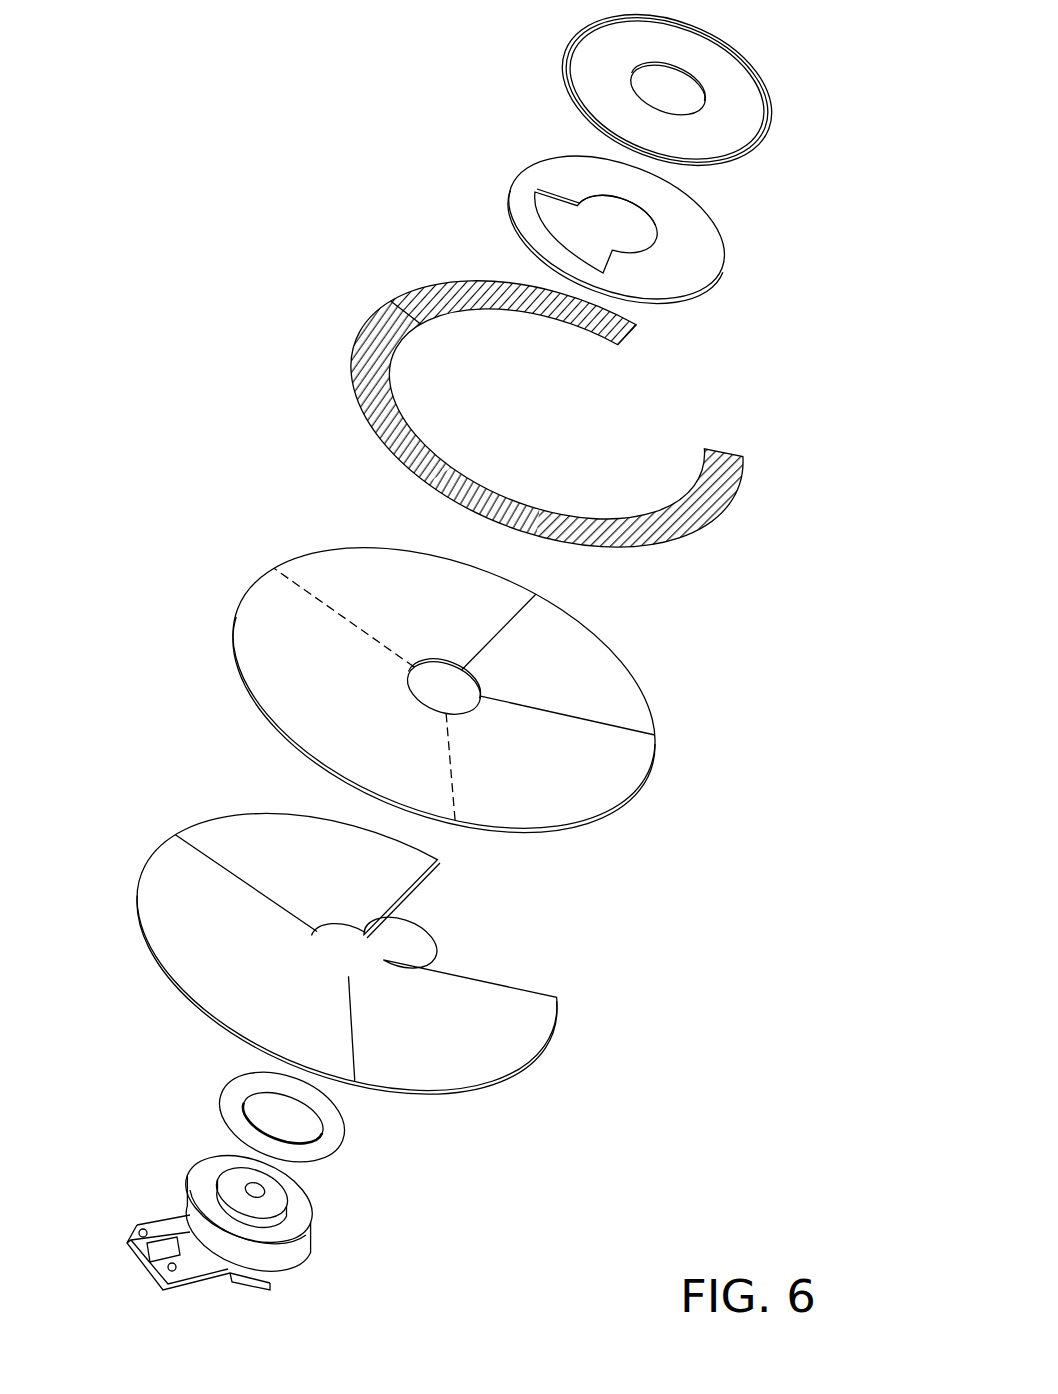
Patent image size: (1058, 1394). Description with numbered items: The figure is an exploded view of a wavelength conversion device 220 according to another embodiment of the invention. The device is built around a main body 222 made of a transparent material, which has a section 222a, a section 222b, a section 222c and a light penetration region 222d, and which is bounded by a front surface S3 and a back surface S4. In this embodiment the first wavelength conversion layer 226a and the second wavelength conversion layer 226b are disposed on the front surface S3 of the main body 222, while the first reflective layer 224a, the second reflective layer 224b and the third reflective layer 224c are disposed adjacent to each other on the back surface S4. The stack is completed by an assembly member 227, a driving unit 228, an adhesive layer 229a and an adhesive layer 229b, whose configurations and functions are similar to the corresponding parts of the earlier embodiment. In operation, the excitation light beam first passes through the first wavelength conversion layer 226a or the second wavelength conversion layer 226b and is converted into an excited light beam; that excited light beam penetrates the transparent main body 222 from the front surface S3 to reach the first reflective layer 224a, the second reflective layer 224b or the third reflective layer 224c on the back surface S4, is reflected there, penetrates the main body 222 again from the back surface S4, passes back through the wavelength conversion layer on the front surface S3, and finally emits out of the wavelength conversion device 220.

The wavelength conversion device 220 is at (715, 1118).
The main body 222 is at (464, 681).
The section 222a is at (330, 576).
The section 222b is at (252, 644).
The section 222c is at (598, 792).
The light penetration region 222d is at (634, 694).
The first reflective layer 224a is at (309, 948).
The second reflective layer 224b is at (155, 935).
The third reflective layer 224c is at (493, 1070).
The first wavelength conversion layer 226a is at (485, 290).
The second wavelength conversion layer 226b is at (671, 537).
The assembly member 227 is at (735, 132).
The driving unit 228 is at (290, 1253).
The adhesive layer 229a is at (325, 1137).
The adhesive layer 229b is at (712, 270).
The front surface S3 is at (382, 584).
The back surface S4 is at (252, 707).